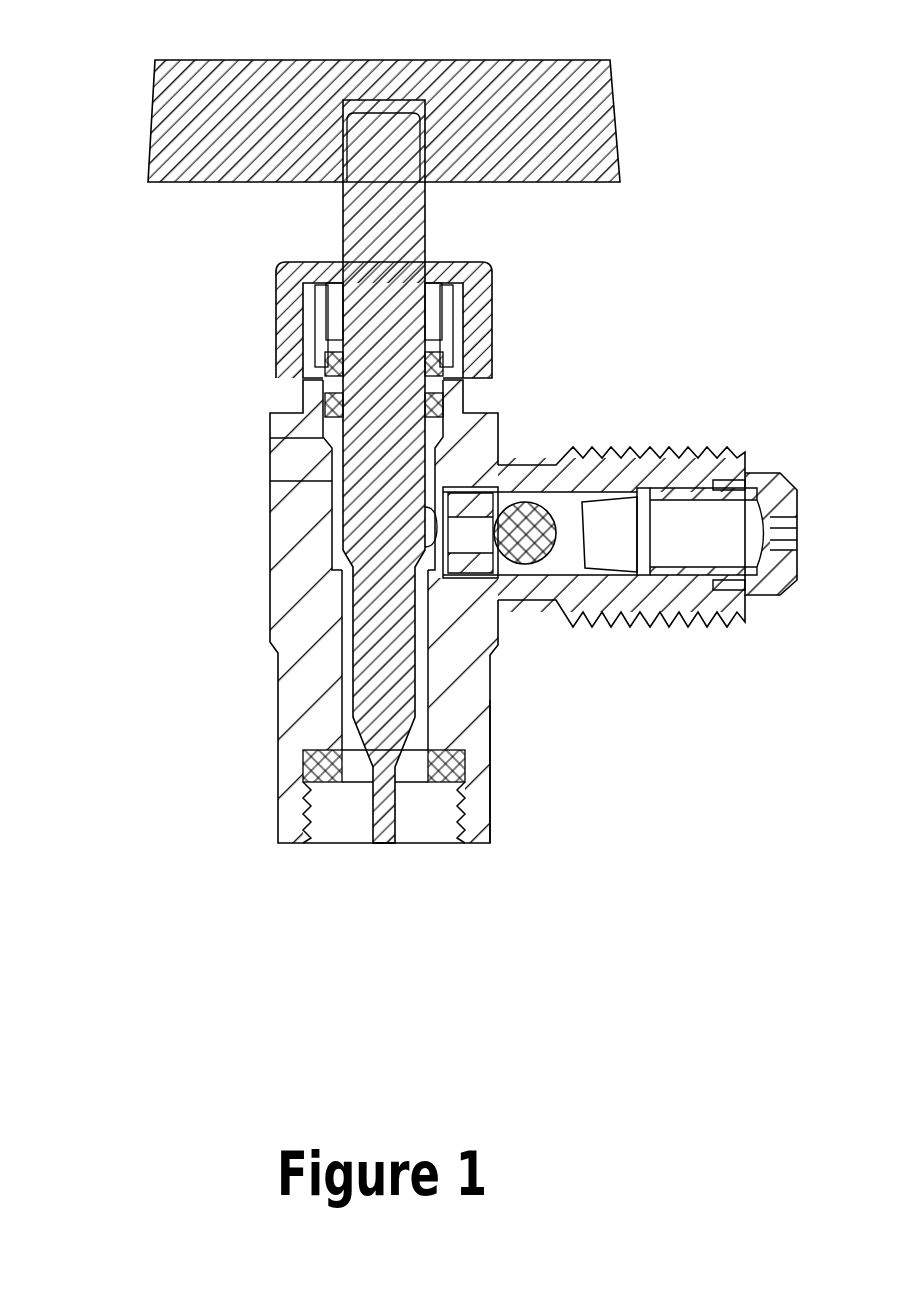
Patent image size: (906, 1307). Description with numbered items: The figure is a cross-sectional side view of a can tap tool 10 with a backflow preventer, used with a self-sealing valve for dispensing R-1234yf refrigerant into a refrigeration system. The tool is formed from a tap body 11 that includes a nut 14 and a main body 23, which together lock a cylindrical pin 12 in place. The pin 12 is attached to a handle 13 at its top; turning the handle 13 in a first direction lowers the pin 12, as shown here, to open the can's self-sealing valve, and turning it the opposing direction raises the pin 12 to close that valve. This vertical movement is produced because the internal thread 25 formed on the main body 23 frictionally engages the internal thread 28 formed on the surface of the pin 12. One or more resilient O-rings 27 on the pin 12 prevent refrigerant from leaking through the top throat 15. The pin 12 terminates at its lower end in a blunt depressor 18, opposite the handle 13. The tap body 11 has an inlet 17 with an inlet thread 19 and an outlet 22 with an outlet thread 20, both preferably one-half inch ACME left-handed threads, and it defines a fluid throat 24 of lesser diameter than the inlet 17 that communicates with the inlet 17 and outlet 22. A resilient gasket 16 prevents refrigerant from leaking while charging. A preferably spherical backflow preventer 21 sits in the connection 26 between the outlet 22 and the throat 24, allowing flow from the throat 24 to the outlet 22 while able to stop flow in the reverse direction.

The can tap tool 10 is at (202, 964).
The tap body 11 is at (270, 598).
The pin 12 is at (343, 215).
The handle 13 is at (340, 60).
The nut 14 is at (277, 363).
The top throat 15 is at (327, 436).
The gasket 16 is at (303, 752).
The inlet 17 is at (337, 825).
The blunt depressor 18 is at (388, 850).
The inlet thread 19 is at (490, 800).
The outlet thread 20 is at (597, 620).
The backflow preventer 21 is at (533, 500).
The outlet 22 is at (743, 535).
The main body 23 is at (300, 678).
The throat 24 is at (425, 633).
The internal thread 25 is at (465, 487).
The connection 26 is at (568, 512).
The O-ring 27 is at (443, 405).
The internal thread 28 is at (303, 480).